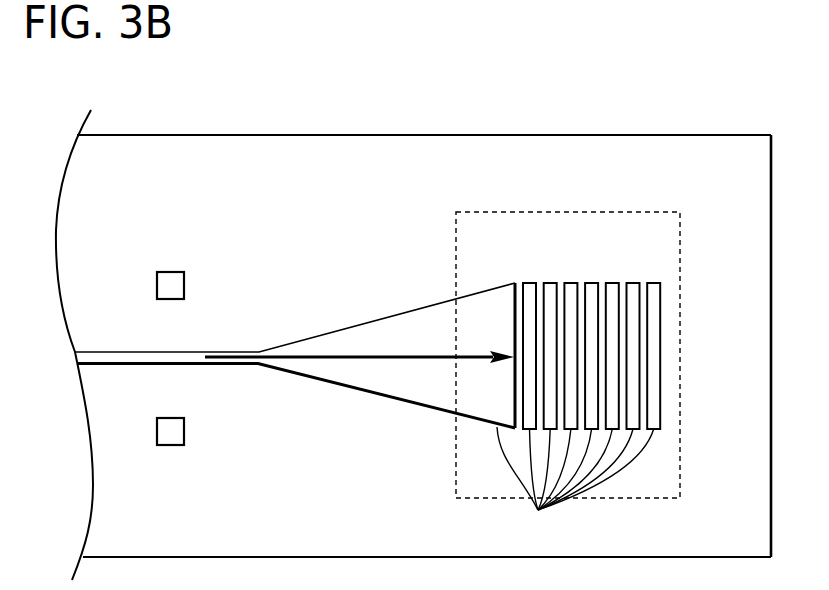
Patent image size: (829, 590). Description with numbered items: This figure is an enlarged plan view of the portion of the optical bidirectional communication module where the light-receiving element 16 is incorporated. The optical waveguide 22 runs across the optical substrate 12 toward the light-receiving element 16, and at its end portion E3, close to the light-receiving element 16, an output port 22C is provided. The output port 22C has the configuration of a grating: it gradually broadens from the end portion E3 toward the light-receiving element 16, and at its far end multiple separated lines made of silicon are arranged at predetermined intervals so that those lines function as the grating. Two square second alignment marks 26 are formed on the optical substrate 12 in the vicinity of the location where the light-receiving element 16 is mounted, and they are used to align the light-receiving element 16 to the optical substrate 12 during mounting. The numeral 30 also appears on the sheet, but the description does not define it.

The optical substrate 12 is at (353, 144).
The light-receiving element 16 is at (573, 211).
The optical waveguide 22 is at (100, 358).
The output port 22C is at (578, 412).
The second alignment marks 26 is at (173, 283).
The photonic device 30 is at (723, 8).
The end portion E3 is at (359, 342).